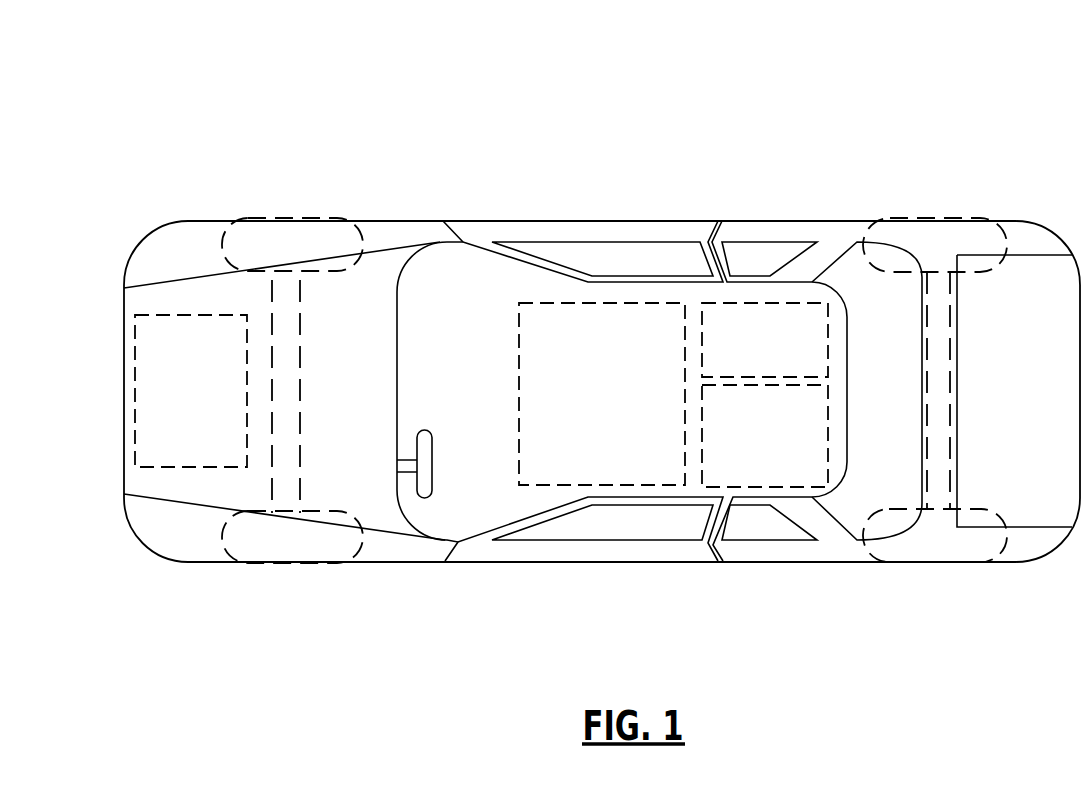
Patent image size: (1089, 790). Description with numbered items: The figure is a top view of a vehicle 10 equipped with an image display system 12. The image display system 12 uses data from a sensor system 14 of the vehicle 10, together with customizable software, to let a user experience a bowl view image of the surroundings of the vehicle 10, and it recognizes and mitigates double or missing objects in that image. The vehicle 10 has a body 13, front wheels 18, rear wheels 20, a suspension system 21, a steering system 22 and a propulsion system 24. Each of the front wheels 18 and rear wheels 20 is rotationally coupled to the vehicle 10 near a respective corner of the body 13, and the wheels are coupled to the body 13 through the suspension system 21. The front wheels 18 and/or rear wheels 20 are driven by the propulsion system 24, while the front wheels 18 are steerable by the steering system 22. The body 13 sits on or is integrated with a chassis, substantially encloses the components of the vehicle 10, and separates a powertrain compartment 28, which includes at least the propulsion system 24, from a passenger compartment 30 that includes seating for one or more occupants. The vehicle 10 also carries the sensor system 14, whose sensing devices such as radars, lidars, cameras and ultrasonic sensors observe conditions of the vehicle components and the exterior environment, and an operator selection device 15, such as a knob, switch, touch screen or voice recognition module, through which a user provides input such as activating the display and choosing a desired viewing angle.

The vehicle 10 is at (623, 113).
The image display system 12 is at (602, 394).
The body 13 is at (483, 242).
The sensor system 14 is at (765, 340).
The operator selection device 15 is at (765, 436).
The front wheels 18 is at (292, 220).
The rear wheels 20 is at (921, 221).
The suspension system 21 is at (611, 392).
The steering system 22 is at (417, 429).
The propulsion system 24 is at (191, 391).
The powertrain compartment 28 is at (180, 298).
The passenger compartment 30 is at (743, 298).